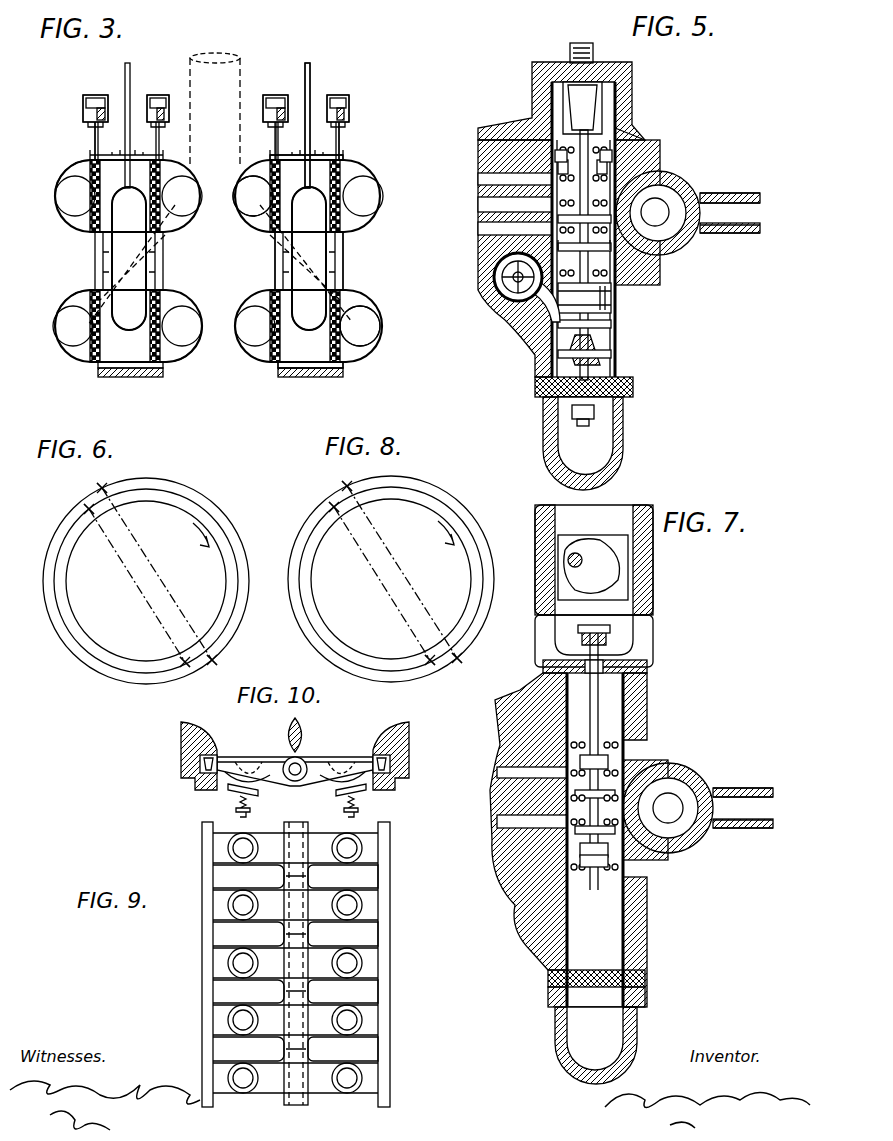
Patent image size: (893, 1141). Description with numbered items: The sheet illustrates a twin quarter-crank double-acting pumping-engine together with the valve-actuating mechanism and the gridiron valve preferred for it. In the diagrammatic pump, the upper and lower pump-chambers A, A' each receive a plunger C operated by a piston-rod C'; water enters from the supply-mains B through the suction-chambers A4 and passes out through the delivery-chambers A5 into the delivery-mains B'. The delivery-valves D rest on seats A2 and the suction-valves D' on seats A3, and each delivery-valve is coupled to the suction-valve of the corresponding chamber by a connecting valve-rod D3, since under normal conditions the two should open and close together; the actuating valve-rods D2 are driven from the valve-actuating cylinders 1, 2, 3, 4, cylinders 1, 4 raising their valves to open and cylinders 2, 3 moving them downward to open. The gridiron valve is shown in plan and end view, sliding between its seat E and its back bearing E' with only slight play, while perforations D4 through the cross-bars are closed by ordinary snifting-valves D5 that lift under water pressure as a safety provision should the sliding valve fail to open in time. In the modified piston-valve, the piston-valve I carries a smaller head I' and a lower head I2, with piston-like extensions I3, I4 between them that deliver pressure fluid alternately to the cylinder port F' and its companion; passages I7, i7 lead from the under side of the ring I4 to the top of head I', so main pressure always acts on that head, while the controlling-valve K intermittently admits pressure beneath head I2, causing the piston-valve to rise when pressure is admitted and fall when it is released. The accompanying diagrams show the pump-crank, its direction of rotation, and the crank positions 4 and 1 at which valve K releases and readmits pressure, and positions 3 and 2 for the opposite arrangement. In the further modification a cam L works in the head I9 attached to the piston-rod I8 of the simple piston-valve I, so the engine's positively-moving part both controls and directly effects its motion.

In FIG. 3, the actuating-cylinder 1 is at (95, 98).
In FIG. 6, the actuating-cylinder 1 is at (217, 665).
In FIG. 8, the actuating-cylinder 1 is at (462, 663).
In FIG. 3, the actuating-cylinder 2 is at (158, 98).
In FIG. 6, the actuating-cylinder 2 is at (179, 668).
In FIG. 8, the actuating-cylinder 2 is at (424, 666).
In FIG. 3, the actuating-cylinder 3 is at (275, 98).
In FIG. 6, the actuating-cylinder 3 is at (81, 515).
In FIG. 8, the actuating-cylinder 3 is at (326, 513).
In FIG. 3, the actuating-cylinder 4 is at (342, 98).
In FIG. 6, the actuating-cylinder 4 is at (100, 480).
In FIG. 8, the actuating-cylinder 4 is at (345, 478).
In FIG. 3, the pump-chamber A is at (215, 187).
In FIG. 3, the pump-chamber A' is at (219, 336).
In FIG. 3, the seat of the delivery-valve A2 is at (240, 218).
In FIG. 3, the seat of the suction-valve A3 is at (240, 336).
In FIG. 3, the suction-chamber A4 is at (66, 162).
In FIG. 3, the delivery-chamber A5 is at (70, 289).
In FIG. 3, the supply-main B is at (218, 261).
In FIG. 3, the delivery-main B' is at (215, 122).
In FIG. 3, the plunger C is at (309, 261).
In FIG. 3, the piston-rod C' is at (322, 125).
In FIG. 3, the delivery-valve D is at (312, 264).
In FIG. 9, the delivery-valve D is at (348, 963).
In FIG. 3, the suction-valve D' is at (311, 304).
In FIG. 3, the actuating valve-rod D2 is at (360, 142).
In FIG. 3, the connecting valve-rod D3 is at (275, 262).
In FIG. 10, the perforation D4 is at (268, 760).
In FIG. 10, the snifting-valve D5 is at (255, 794).
In FIG. 9, the snifting-valve D5 is at (243, 843).
In FIG. 10, the seat of the valve E is at (305, 756).
In FIG. 10, the back bearing E' is at (317, 768).
In FIG. 3, the port F' is at (213, 131).
In FIG. 7, the port F' is at (513, 786).
In FIG. 7, the piston-valve I is at (595, 761).
In FIG. 5, the head I' is at (582, 108).
In FIG. 5, the lower head I2 is at (580, 310).
In FIG. 7, the piston-like extension I3 is at (590, 840).
In FIG. 5, the piston-like extension I4 is at (668, 168).
In FIG. 7, the piston-like extension I4 is at (690, 762).
In FIG. 5, the passage I7 is at (618, 135).
In FIG. 5, the passage i7 is at (552, 153).
In FIG. 7, the piston-rod I8 is at (640, 672).
In FIG. 7, the head I9 is at (594, 626).
In FIG. 5, the controlling-valve K is at (492, 352).
In FIG. 7, the cam L is at (606, 581).